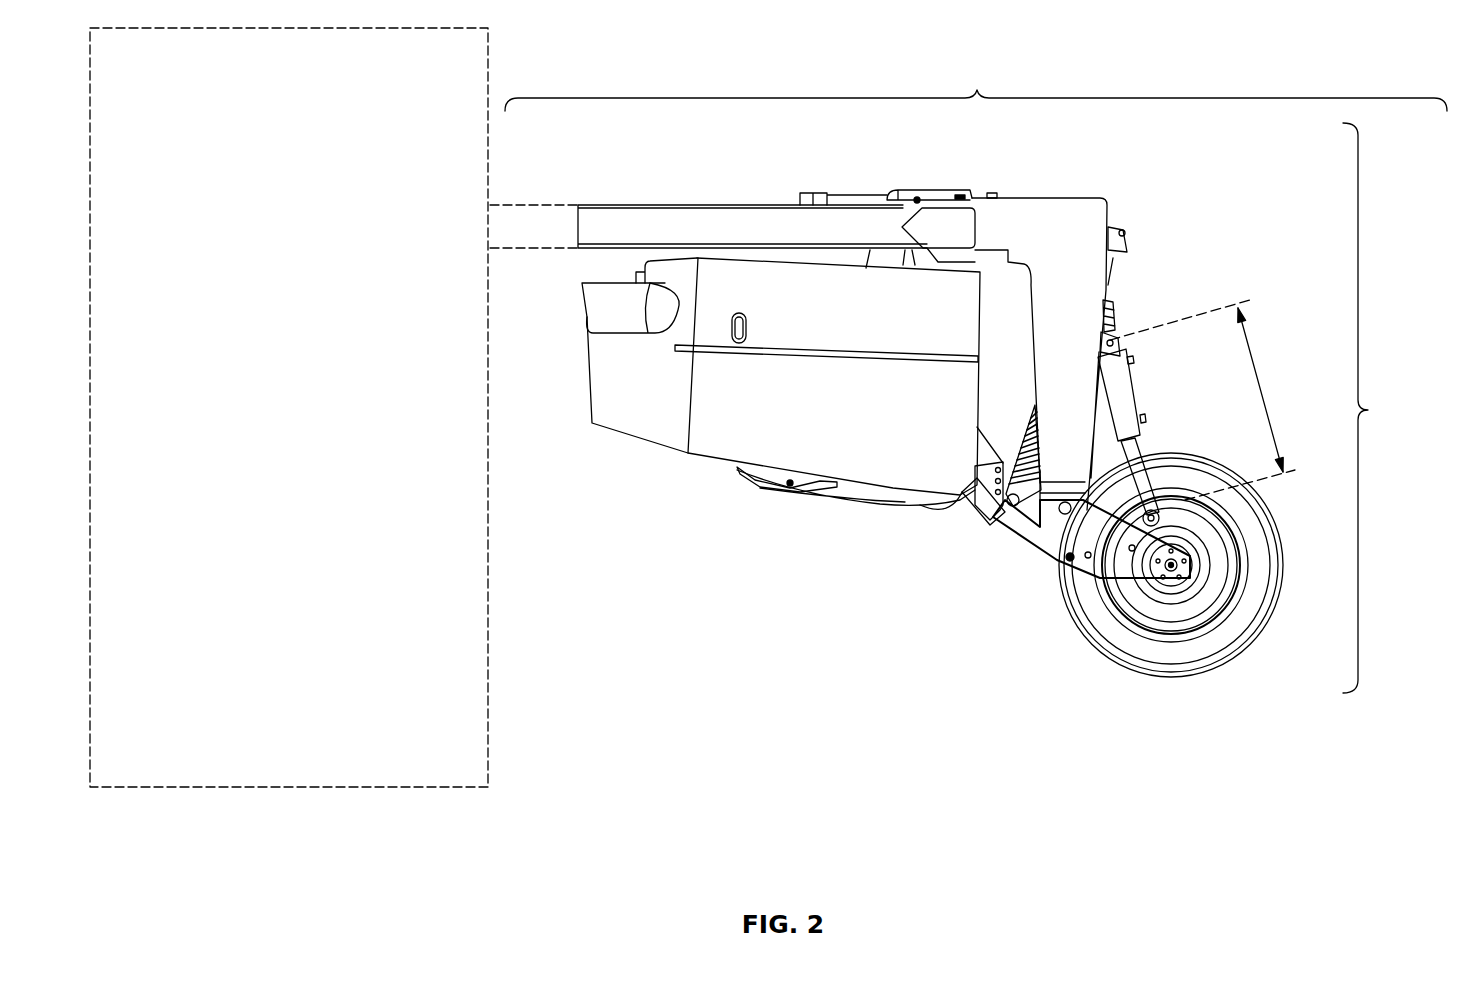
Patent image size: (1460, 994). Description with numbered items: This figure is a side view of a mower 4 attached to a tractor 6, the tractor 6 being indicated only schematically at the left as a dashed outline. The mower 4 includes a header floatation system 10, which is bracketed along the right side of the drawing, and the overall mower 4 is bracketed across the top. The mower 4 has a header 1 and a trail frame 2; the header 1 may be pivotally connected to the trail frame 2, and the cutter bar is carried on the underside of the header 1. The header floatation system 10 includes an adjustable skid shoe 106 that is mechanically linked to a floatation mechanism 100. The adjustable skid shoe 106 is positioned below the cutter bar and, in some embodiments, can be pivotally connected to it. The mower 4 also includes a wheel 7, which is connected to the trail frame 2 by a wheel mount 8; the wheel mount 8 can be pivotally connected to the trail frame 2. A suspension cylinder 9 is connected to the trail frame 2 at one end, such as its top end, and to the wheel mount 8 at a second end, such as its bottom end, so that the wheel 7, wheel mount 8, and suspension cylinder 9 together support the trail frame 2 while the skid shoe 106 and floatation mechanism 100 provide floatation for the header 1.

The header 1 is at (722, 418).
The trail frame 2 is at (1062, 340).
The mower 4 is at (977, 92).
The tractor 6 is at (303, 727).
The wheel 7 is at (1198, 653).
The wheel mount 8 is at (1112, 555).
The suspension cylinder 9 is at (1262, 392).
The header floatation system 10 is at (1368, 410).
The floatation mechanism 100 is at (1040, 420).
The adjustable skid shoe 106 is at (968, 513).